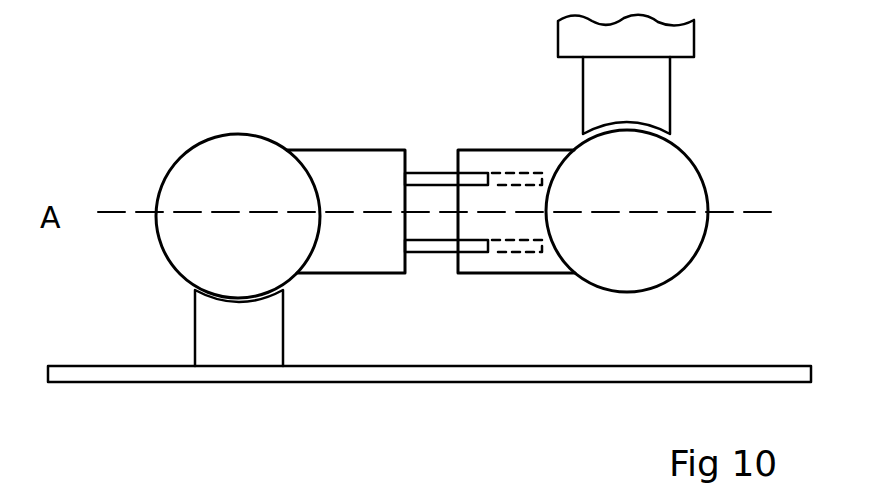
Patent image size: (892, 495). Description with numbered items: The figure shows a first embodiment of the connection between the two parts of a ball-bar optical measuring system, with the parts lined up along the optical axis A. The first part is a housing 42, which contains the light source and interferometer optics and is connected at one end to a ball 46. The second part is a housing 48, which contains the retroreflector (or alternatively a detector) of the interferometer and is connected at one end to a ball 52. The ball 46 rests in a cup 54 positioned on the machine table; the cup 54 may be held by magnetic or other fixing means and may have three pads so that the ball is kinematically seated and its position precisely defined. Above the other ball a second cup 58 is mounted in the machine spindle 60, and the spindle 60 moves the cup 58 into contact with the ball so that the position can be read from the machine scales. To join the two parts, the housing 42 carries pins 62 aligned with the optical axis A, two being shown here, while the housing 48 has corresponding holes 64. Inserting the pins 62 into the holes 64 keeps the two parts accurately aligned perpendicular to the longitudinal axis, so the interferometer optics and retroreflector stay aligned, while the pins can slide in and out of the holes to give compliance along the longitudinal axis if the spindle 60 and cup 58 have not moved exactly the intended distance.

The housing 42 is at (347, 150).
The ball 46 is at (212, 185).
The housing 48 is at (499, 150).
The ball 52 is at (662, 264).
The cup 54 is at (225, 327).
The second cup 58 is at (671, 95).
The machine spindle 60 is at (583, 37).
The pins 62 is at (423, 253).
The holes 64 is at (500, 253).